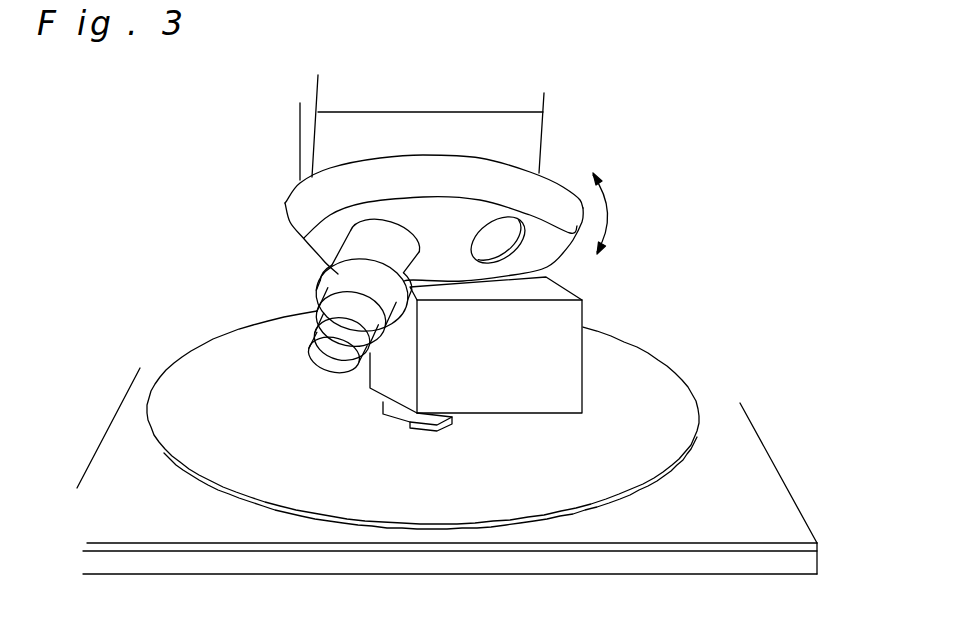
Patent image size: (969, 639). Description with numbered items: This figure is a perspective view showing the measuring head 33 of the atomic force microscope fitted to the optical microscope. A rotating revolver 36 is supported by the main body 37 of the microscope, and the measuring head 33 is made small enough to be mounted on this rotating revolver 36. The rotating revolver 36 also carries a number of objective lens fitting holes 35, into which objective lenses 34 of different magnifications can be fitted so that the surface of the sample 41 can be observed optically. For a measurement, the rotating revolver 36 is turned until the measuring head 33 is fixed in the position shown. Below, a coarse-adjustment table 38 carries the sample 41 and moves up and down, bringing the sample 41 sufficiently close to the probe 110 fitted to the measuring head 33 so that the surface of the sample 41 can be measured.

The measuring head 33 is at (583, 362).
The objective lens 34 is at (330, 266).
The objective lens fitting hole 35 is at (513, 248).
The rotating revolver 36 is at (543, 197).
The main body 37 is at (547, 128).
The coarse-adjustment table 38 is at (205, 523).
The sample 41 is at (345, 495).
The probe 110 is at (447, 430).